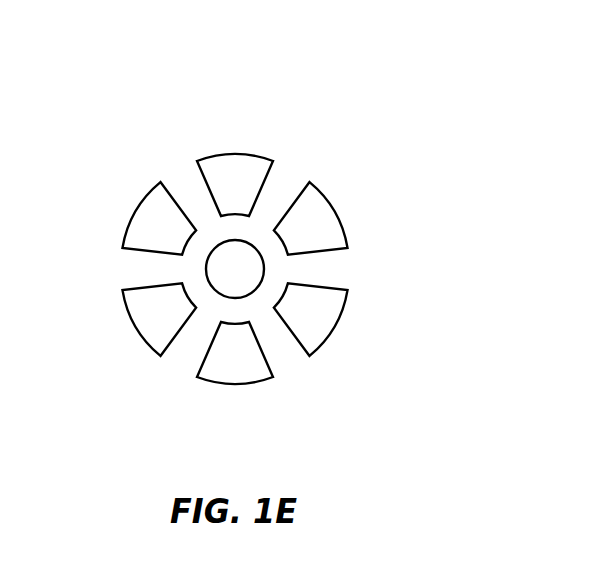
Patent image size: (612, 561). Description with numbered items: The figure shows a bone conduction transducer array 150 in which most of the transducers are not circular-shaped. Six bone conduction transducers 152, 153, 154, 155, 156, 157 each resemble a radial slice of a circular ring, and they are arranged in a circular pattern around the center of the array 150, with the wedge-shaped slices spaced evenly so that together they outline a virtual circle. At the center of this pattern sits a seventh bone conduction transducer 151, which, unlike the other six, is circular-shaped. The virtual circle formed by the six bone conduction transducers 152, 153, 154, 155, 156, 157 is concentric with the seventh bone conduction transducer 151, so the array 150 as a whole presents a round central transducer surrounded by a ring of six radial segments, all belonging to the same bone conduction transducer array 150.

The bone conduction transducer array 150 is at (248, 70).
The seventh bone conduction transducer 151 is at (235, 269).
The bone conduction transducer 152 is at (255, 159).
The bone conduction transducer 153 is at (332, 204).
The bone conduction transducer 154 is at (328, 342).
The bone conduction transducer 155 is at (248, 380).
The bone conduction transducer 156 is at (147, 342).
The bone conduction transducer 157 is at (143, 206).